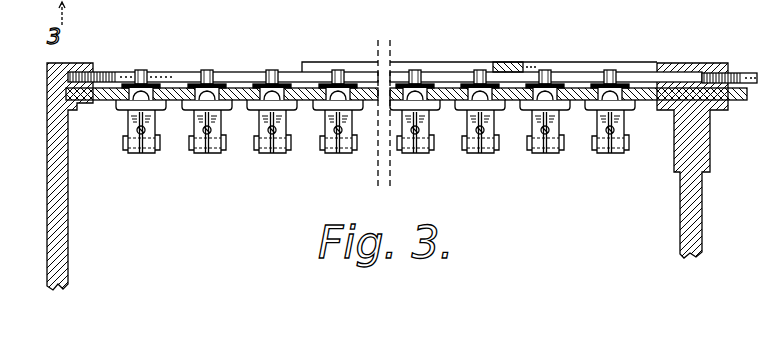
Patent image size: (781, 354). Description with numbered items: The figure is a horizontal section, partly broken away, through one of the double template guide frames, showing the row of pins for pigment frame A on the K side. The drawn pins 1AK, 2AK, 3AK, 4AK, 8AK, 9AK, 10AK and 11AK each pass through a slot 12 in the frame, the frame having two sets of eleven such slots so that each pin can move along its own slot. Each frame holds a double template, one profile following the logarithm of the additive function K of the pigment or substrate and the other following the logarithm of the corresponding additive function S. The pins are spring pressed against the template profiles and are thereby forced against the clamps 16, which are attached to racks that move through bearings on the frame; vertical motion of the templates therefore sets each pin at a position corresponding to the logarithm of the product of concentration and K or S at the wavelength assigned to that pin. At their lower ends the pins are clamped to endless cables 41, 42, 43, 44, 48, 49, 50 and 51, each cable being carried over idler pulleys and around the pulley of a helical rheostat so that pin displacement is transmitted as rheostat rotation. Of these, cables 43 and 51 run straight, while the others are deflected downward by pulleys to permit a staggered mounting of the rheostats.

The pin 1AK is at (143, 70).
The pin 2AK is at (209, 70).
The pin 3AK is at (273, 70).
The pin 4AK is at (336, 70).
The pin 8AK is at (416, 70).
The pin 9AK is at (483, 70).
The pin 10AK is at (550, 70).
The pin 11AK is at (613, 70).
The additive function K is at (186, 68).
The additive function S is at (515, 73).
The clamp 16 is at (397, 63).
The slot 12 is at (203, 99).
The endless cable 41 is at (138, 132).
The endless cable 42 is at (204, 132).
The endless cable 43 is at (269, 131).
The endless cable 44 is at (335, 131).
The endless cable 48 is at (418, 131).
The endless cable 49 is at (483, 131).
The endless cable 50 is at (548, 131).
The endless cable 51 is at (612, 131).